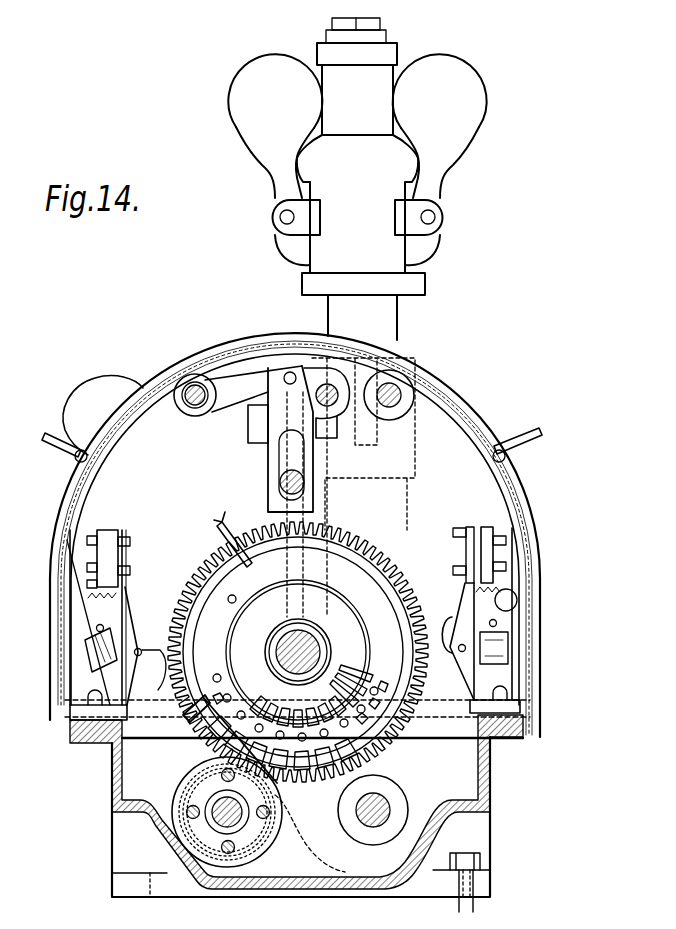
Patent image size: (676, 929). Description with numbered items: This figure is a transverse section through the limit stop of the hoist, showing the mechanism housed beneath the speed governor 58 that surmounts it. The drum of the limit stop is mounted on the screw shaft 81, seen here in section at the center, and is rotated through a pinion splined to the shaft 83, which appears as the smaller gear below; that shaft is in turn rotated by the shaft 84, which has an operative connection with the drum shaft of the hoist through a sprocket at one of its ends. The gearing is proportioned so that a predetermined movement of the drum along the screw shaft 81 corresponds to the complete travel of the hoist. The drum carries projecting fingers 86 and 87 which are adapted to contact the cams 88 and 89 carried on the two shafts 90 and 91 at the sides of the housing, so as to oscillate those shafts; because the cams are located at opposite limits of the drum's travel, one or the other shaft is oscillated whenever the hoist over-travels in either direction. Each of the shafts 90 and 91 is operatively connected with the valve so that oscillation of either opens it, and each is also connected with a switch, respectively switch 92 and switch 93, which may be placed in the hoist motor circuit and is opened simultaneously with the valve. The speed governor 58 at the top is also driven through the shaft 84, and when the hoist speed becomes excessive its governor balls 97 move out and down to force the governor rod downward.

The speed governor 58 is at (330, 258).
The governor balls 97 is at (240, 117).
The screw shaft 81 is at (300, 650).
The shaft 83 is at (242, 823).
The shaft 84 is at (378, 812).
The projecting finger 86 is at (235, 511).
The projecting finger 87 is at (160, 656).
The cam 88 is at (447, 617).
The cam 89 is at (157, 690).
The shaft 90 is at (482, 660).
The shaft 91 is at (140, 650).
The switch 92 is at (510, 550).
The switch 93 is at (73, 550).